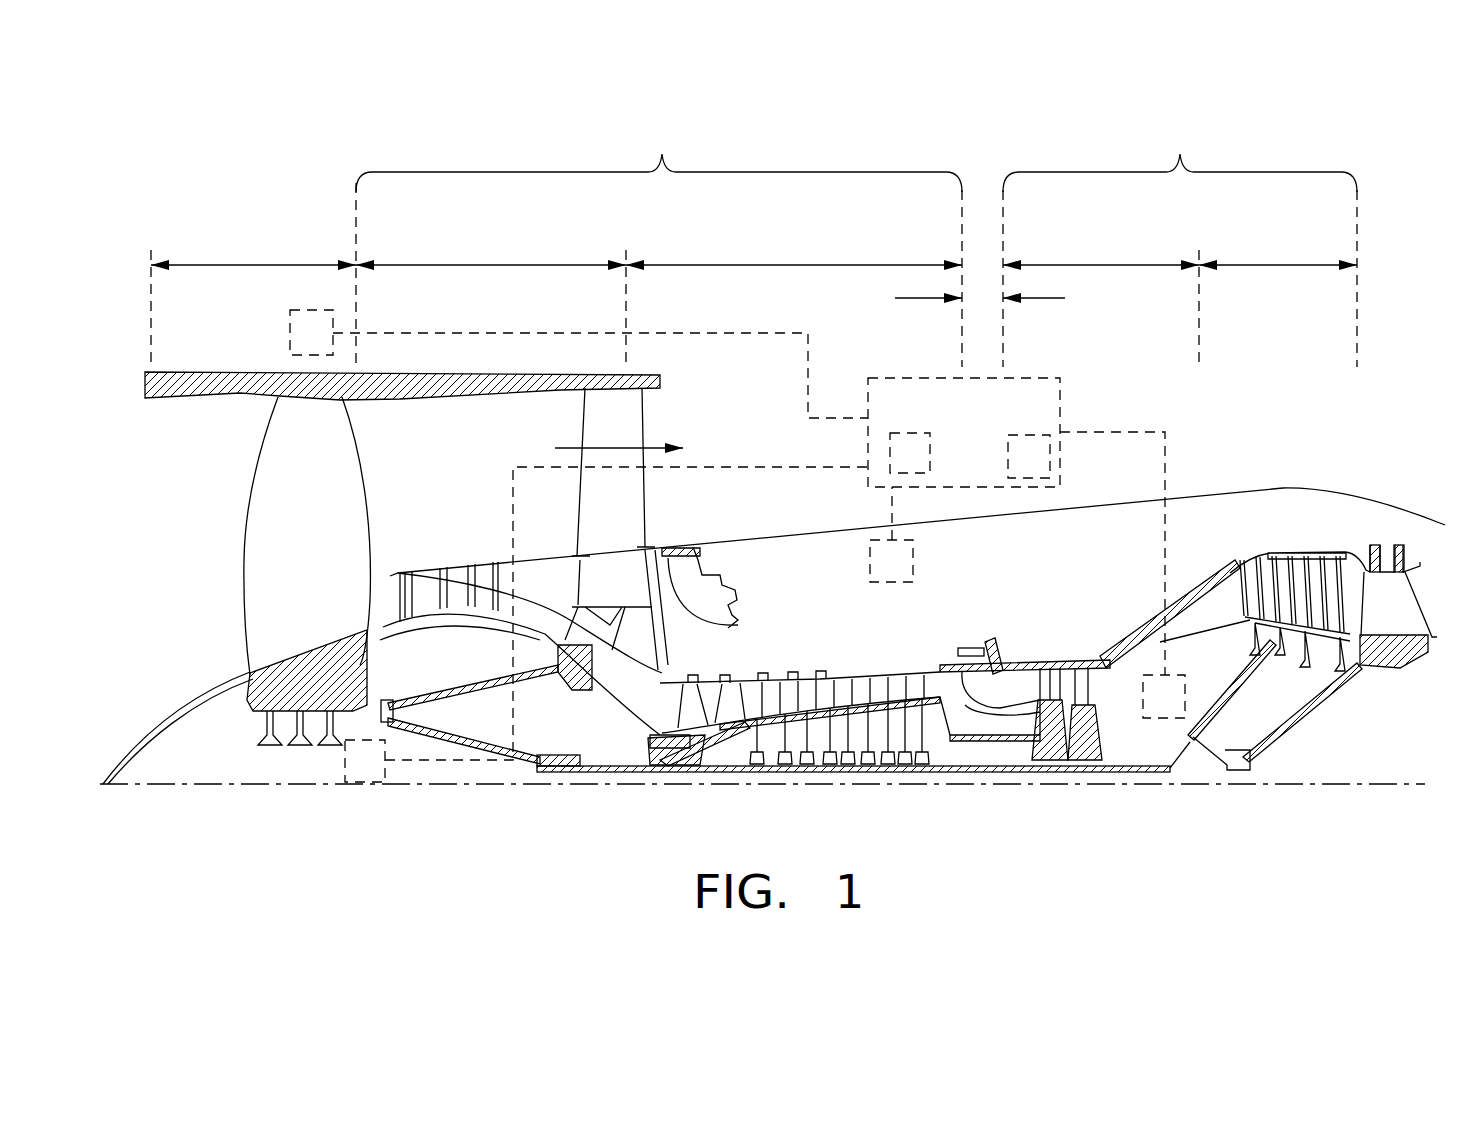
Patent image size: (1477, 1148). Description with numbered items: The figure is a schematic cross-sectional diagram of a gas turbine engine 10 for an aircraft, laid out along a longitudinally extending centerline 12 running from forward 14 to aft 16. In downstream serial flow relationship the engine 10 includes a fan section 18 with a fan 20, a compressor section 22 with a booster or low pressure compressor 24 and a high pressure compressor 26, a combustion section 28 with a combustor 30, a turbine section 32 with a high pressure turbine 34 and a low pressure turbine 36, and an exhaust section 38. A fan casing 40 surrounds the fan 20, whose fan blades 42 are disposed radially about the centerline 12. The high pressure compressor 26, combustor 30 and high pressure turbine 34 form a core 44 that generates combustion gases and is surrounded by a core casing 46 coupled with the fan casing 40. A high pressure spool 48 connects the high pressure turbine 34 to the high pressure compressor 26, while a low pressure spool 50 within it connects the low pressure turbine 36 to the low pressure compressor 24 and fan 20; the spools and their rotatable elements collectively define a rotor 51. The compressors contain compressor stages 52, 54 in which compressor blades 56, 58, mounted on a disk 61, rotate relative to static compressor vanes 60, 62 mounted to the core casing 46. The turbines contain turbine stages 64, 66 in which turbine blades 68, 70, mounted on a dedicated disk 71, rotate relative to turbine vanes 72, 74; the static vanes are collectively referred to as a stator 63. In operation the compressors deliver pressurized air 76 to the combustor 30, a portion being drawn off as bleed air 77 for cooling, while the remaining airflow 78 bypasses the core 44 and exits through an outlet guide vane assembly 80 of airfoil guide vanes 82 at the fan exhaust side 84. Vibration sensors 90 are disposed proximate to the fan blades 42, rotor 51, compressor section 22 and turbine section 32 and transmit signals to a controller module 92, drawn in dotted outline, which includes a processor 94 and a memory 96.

The gas turbine engine 10 is at (1374, 295).
The centerline 12 is at (233, 787).
The forward 14 is at (184, 510).
The aft 16 is at (1460, 606).
The fan section 18 is at (250, 265).
The fan 20 is at (226, 631).
The compressor section 22 is at (662, 154).
The low pressure compressor 24 is at (497, 265).
The high pressure compressor 26 is at (795, 265).
The combustion section 28 is at (905, 298).
The combustor 30 is at (1000, 675).
The turbine section 32 is at (1180, 154).
The high pressure turbine 34 is at (1095, 265).
The low pressure turbine 36 is at (1275, 265).
The exhaust section 38 is at (1450, 540).
The fan casing 40 is at (385, 373).
The fan blades 42 is at (330, 443).
The core 44 is at (922, 556).
The core casing 46 is at (1185, 592).
The HP shaft or spool 48 is at (965, 760).
The LP shaft or spool 50 is at (555, 770).
The rotor 51 is at (820, 778).
The compressor stages 52 is at (475, 512).
The compressor stages 54 is at (792, 660).
The compressor blades 56 is at (435, 587).
The compressor blades 58 is at (705, 690).
The static compressor vanes 60 is at (408, 580).
The disk 61 is at (455, 612).
The static compressor vanes 62 is at (688, 682).
The stator 63 is at (690, 748).
The turbine stages 64 is at (1105, 612).
The turbine stages 66 is at (1380, 492).
The turbine blades 68 is at (1088, 662).
The turbine blades 70 is at (1342, 565).
The disk 71 is at (1075, 722).
The turbine vanes 72 is at (1045, 662).
The turbine vanes 74 is at (1322, 565).
The pressurized air 76 is at (592, 692).
The bleed air 77 is at (818, 664).
The airflow 78 is at (565, 448).
The outlet guide vane assembly 80 is at (658, 512).
The airfoil guide vanes 82 is at (590, 487).
The fan exhaust side 84 is at (662, 422).
The vibration sensors 90 is at (328, 349).
The controller module 92 is at (983, 468).
The processor 94 is at (926, 468).
The memory 96 is at (1045, 468).